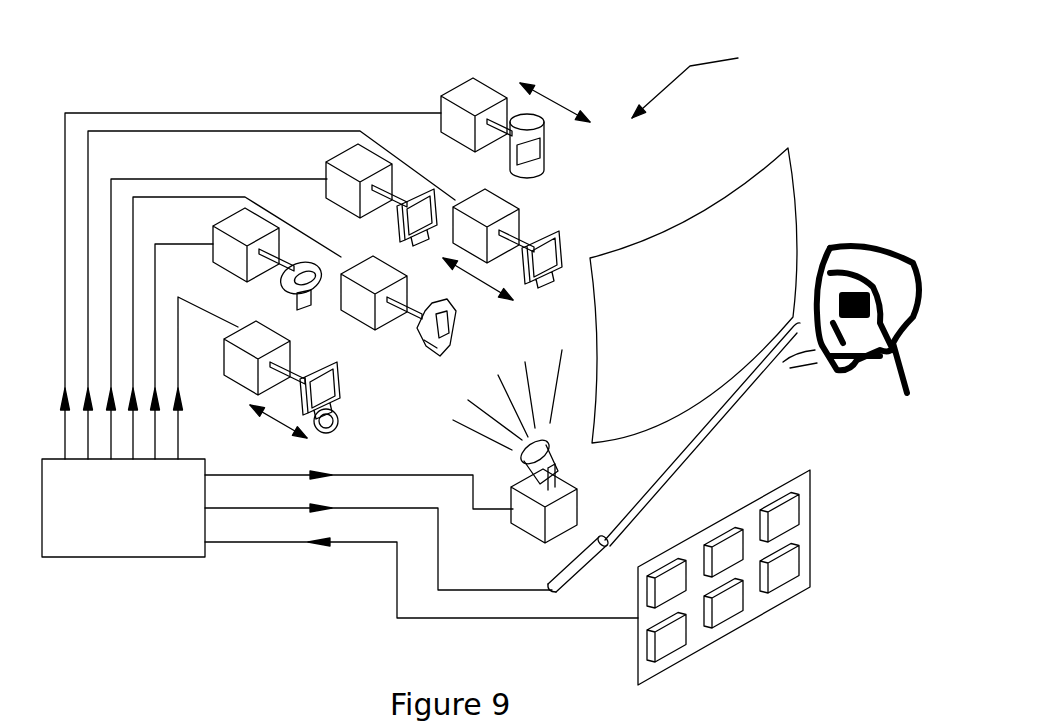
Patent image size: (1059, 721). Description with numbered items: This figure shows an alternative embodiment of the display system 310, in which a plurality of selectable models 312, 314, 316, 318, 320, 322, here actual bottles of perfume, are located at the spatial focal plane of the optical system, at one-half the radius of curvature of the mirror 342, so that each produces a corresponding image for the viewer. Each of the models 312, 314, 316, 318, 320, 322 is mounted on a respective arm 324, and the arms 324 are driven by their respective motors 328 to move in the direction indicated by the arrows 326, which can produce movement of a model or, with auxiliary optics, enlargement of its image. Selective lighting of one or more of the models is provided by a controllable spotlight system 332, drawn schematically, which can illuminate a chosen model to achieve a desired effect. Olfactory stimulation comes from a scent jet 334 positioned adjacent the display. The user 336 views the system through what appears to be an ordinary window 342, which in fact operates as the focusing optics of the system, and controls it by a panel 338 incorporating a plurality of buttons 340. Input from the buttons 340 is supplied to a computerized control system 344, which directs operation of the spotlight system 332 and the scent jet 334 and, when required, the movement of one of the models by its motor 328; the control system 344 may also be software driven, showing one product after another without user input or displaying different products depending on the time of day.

The system 310 is at (712, 81).
The selectable model 312 is at (572, 257).
The selectable model 314 is at (433, 358).
The selectable model 316 is at (335, 432).
The selectable model 318 is at (283, 300).
The selectable model 320 is at (421, 186).
The selectable model 322 is at (545, 118).
The arm 324 is at (523, 216).
The arrows 326 is at (560, 95).
The motor 328 is at (250, 367).
The controllable spotlight system 332 is at (560, 462).
The scent jet 334 is at (565, 566).
The user 336 is at (828, 240).
The panel 338 is at (783, 603).
The buttons 340 is at (788, 518).
The window 342 is at (793, 167).
The computerized control system 344 is at (120, 558).